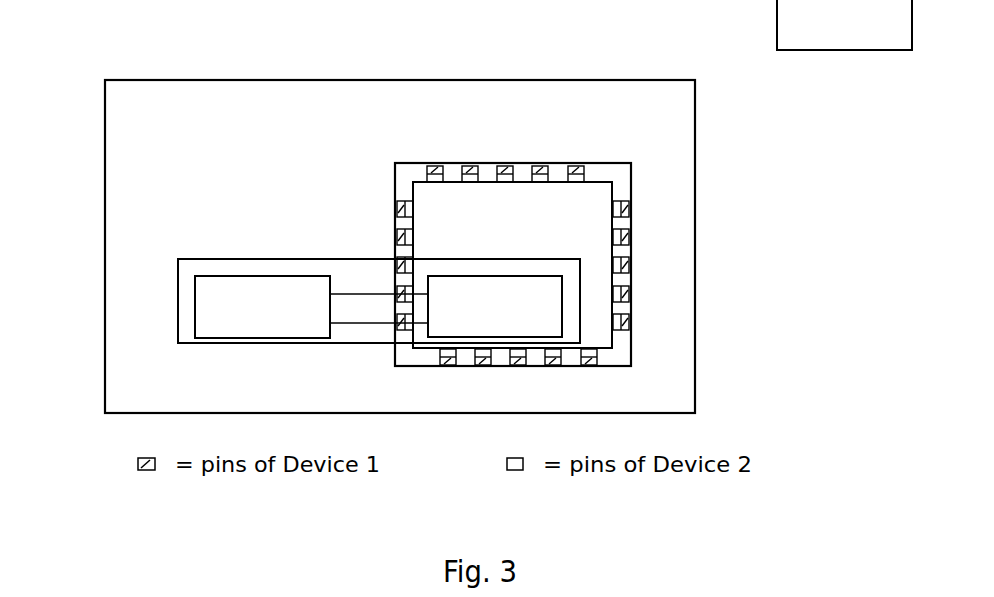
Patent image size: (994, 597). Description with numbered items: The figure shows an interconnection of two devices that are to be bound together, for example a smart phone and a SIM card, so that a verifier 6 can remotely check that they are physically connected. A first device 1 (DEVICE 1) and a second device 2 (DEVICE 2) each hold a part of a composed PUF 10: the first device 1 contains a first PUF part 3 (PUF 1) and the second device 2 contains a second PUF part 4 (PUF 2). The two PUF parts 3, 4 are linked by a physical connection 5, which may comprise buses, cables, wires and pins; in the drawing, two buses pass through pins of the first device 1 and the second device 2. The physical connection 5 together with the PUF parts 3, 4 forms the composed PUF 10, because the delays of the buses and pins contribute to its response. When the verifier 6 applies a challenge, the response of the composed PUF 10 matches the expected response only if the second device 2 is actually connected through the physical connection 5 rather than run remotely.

The first device 1 is at (153, 95).
The second device 2 is at (632, 177).
The first PUF part 3 is at (218, 279).
The second PUF part 4 is at (562, 322).
The physical connection 5 is at (382, 278).
The verifier 6 is at (795, 10).
The composed PUF 10 is at (178, 295).